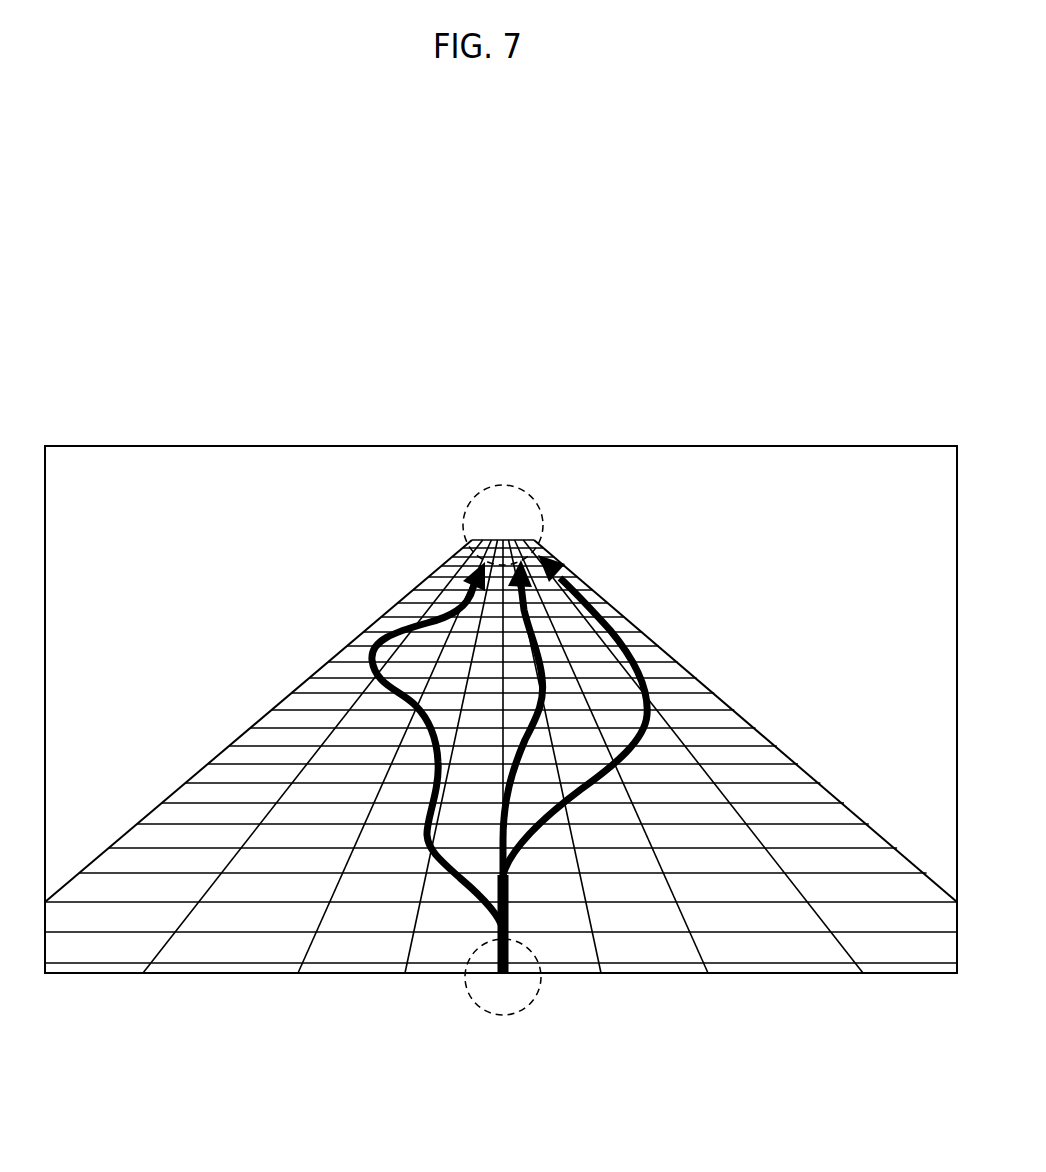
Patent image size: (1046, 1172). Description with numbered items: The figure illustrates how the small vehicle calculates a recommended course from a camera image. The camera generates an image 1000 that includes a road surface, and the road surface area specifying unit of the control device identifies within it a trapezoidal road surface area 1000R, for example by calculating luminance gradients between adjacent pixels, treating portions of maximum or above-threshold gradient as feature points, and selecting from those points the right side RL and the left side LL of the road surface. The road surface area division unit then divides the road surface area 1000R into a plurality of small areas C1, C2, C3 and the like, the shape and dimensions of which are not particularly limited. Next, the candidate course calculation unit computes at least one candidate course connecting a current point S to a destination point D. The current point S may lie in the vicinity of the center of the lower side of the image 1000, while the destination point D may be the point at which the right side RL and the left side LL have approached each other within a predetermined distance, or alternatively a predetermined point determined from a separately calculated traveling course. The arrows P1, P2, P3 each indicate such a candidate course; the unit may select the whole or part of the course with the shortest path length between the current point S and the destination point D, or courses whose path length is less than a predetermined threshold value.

The image 1000 is at (590, 445).
The road surface area 1000R is at (655, 562).
The destination point D is at (496, 485).
The current point S is at (525, 1005).
The candidate course P1 is at (443, 612).
The candidate course P2 is at (540, 715).
The candidate course P3 is at (573, 582).
The left side LL is at (302, 683).
The right side RL is at (677, 662).
The small area C1 is at (108, 948).
The small area C2 is at (230, 948).
The small area C3 is at (358, 948).